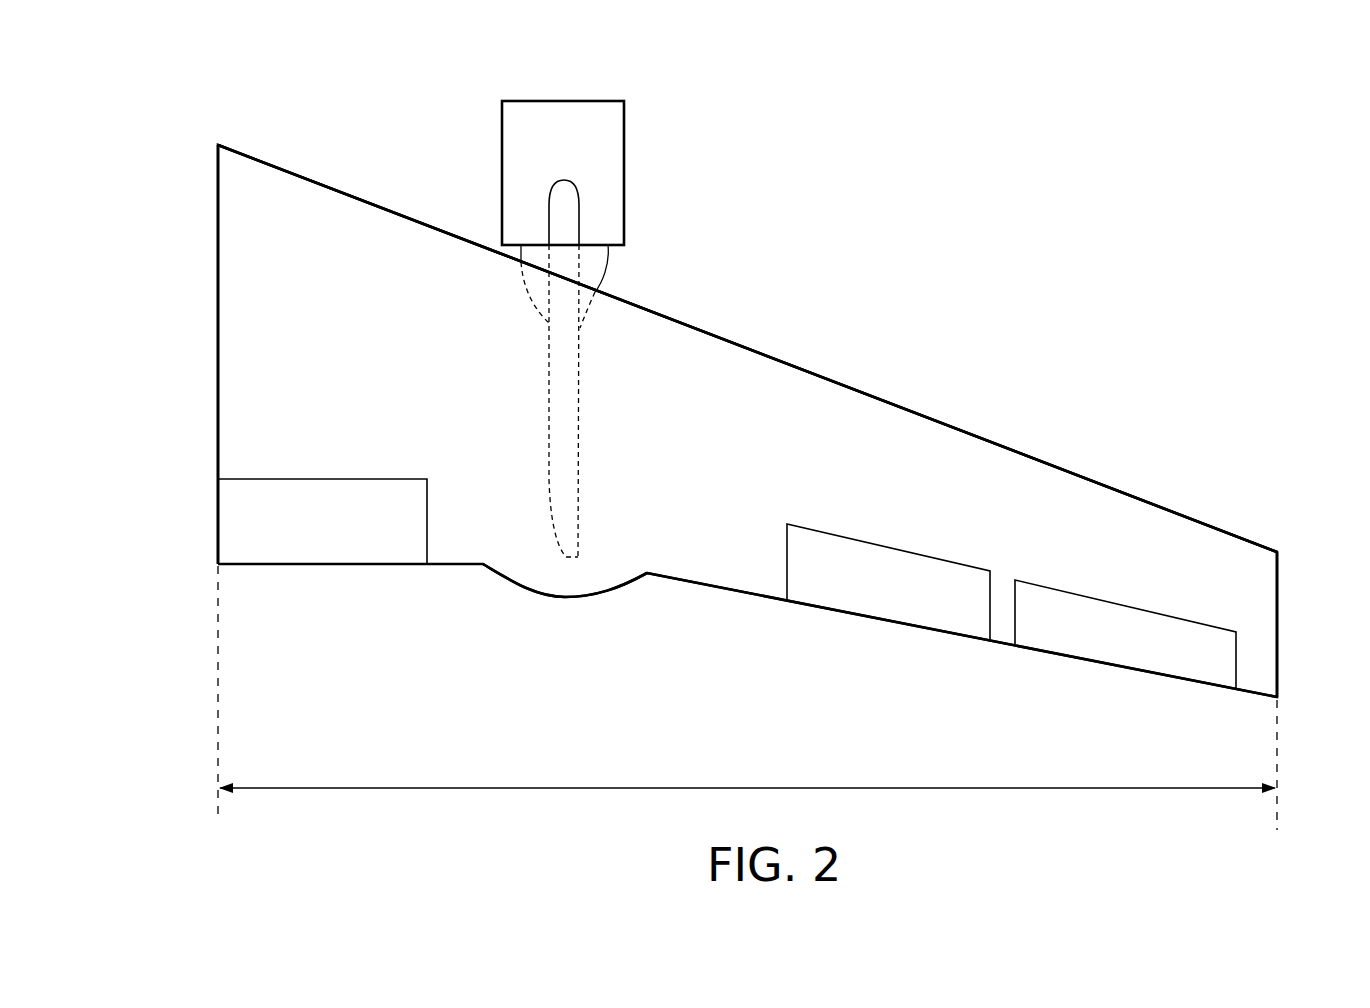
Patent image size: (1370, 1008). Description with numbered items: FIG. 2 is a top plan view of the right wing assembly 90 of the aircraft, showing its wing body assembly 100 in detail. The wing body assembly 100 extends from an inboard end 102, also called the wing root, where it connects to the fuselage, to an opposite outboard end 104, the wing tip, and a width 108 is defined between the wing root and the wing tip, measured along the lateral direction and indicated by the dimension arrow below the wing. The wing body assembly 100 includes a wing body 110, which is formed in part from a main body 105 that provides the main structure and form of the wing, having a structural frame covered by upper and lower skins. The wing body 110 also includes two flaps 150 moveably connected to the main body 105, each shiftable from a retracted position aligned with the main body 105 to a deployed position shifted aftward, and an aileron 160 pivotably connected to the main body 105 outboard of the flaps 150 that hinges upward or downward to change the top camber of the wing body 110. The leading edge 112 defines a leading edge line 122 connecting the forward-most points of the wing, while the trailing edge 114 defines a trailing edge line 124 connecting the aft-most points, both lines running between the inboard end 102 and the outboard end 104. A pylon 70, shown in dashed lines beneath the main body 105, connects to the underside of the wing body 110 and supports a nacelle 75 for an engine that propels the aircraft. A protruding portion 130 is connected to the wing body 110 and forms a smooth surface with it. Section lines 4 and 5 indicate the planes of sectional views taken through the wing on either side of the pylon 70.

The section line 4- 4 is at (441, 640).
The section line 5- 5 is at (586, 262).
The pylon 70 is at (568, 568).
The nacelle 75 is at (629, 140).
The wing assembly 90 is at (753, 394).
The wing body assembly 100 is at (1172, 168).
The inboard end 102 is at (149, 147).
The outboard end 104 is at (1318, 546).
The main body 105 is at (304, 338).
The width 108 is at (813, 788).
The wing body 110 is at (1061, 508).
The leading edge 112 is at (747, 348).
The leading edge line 122 is at (879, 394).
The trailing edge 114 is at (962, 609).
The trailing edge line 124 is at (705, 580).
The protruding portion 130 is at (639, 591).
The flap 150 is at (304, 533).
The aileron 160 is at (1107, 650).